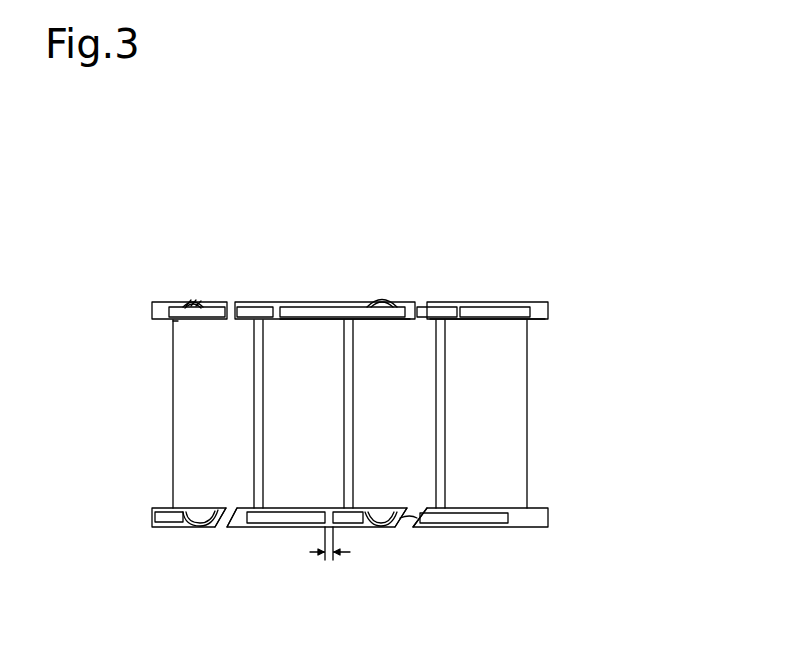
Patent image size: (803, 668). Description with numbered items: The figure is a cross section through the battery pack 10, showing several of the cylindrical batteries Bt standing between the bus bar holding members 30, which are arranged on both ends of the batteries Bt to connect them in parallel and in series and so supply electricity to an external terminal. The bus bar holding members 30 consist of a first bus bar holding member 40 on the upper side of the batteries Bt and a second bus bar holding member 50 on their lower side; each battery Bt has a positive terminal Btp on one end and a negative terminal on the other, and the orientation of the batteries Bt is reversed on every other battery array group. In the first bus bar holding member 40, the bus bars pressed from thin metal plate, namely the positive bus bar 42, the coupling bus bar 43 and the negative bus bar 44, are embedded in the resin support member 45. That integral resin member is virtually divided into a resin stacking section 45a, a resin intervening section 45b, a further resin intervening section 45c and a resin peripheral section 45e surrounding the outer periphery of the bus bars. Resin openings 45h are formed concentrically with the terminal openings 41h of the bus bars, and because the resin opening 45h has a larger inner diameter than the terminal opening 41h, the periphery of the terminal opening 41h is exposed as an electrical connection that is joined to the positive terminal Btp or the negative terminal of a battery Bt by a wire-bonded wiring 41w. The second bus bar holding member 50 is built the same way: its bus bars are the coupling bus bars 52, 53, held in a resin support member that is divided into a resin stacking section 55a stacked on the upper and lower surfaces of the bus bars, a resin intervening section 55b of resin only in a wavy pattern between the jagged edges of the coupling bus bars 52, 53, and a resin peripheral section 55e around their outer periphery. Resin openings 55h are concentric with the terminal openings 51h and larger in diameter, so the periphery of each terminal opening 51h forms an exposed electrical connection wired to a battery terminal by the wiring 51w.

The battery pack 10 is at (636, 256).
The bus bar holding members 30 is at (627, 295).
The first bus bar holding member 40 is at (548, 307).
The terminal opening 41h is at (197, 304).
The wiring 41w is at (205, 306).
The positive bus bar 42 is at (152, 313).
The coupling bus bar 43 is at (307, 320).
The negative bus bar 44 is at (485, 322).
The resin support member 45 is at (557, 203).
The resin stacking section 45a is at (341, 290).
The resin intervening section 45b is at (284, 290).
The resin intervening section 45c is at (464, 290).
The resin peripheral section 45e is at (534, 290).
The resin opening 45h is at (187, 301).
The second bus bar holding member 50 is at (550, 518).
The terminal opening 51h is at (407, 530).
The wiring 51w is at (379, 528).
The coupling bus bar 52 is at (237, 527).
The coupling bus bar 53 is at (492, 528).
The resin stacking section 55a is at (277, 528).
The resin intervening section 55b is at (333, 530).
The resin peripheral section 55e is at (162, 528).
The resin opening 55h is at (423, 533).
The battery Bt is at (173, 488).
The positive terminal Btp is at (185, 323).